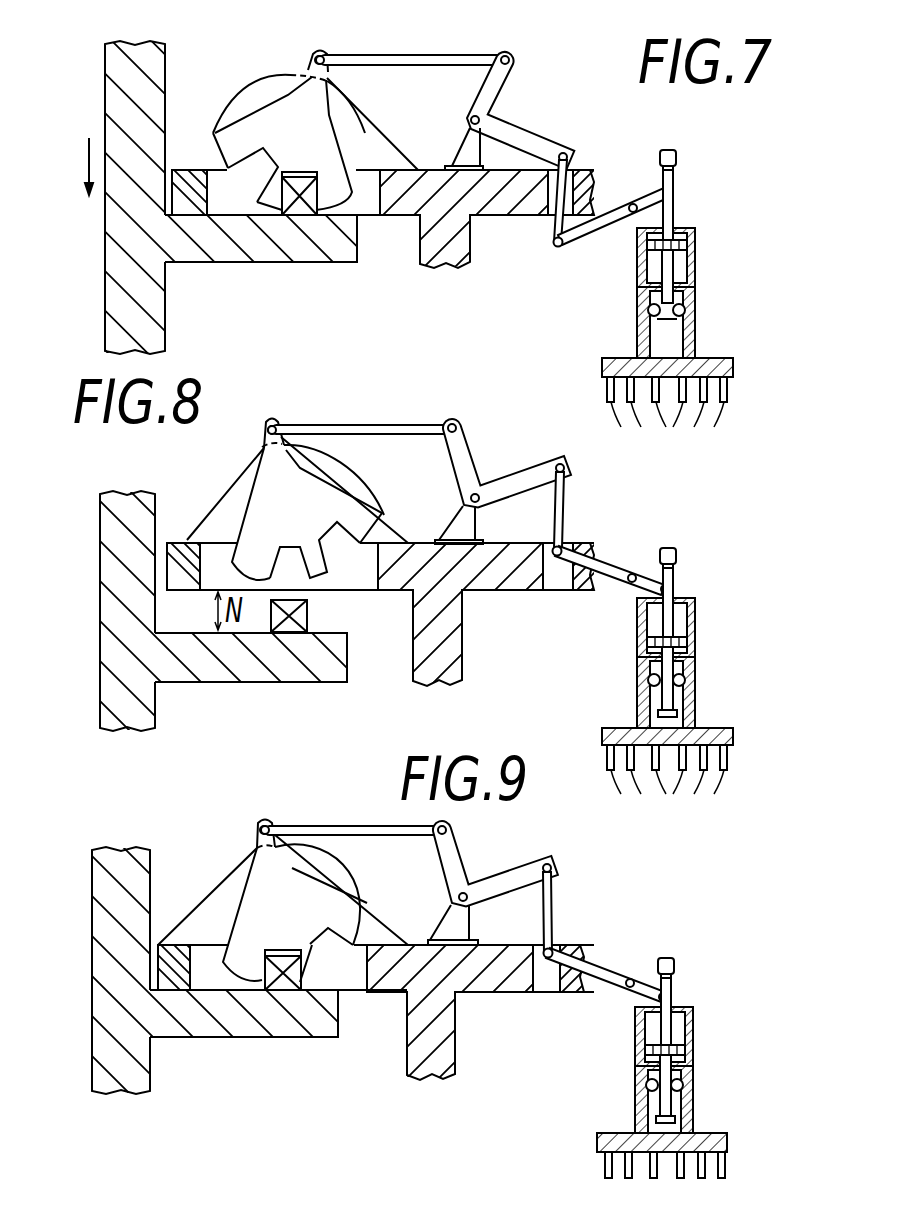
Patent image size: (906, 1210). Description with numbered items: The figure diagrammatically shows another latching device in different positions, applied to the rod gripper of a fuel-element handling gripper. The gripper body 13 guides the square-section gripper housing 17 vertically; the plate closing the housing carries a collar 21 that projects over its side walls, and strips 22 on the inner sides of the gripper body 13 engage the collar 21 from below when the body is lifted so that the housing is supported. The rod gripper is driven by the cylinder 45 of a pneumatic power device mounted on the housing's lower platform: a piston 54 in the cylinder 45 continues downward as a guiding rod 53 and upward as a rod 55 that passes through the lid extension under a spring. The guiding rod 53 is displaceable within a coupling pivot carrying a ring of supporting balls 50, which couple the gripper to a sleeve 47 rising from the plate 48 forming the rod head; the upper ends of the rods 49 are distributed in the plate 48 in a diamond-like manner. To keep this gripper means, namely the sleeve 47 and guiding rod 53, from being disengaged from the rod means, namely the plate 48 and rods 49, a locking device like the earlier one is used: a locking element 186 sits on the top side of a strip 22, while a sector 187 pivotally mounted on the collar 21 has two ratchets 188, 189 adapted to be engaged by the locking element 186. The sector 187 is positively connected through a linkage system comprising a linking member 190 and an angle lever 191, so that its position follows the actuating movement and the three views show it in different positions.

In FIG. 7, the gripper body 13 is at (122, 78).
In FIG. 8, the gripper body 13 is at (100, 520).
In FIG. 9, the gripper body 13 is at (105, 885).
In FIG. 7, the gripper housing 17 is at (428, 244).
In FIG. 8, the gripper housing 17 is at (455, 660).
In FIG. 9, the gripper housing 17 is at (425, 1064).
In FIG. 7, the collar 21 is at (186, 165).
In FIG. 8, the collar 21 is at (178, 560).
In FIG. 9, the collar 21 is at (178, 955).
In FIG. 7, the strips 22 is at (202, 255).
In FIG. 8, the strips 22 is at (243, 668).
In FIG. 9, the strips 22 is at (197, 1025).
In FIG. 7, the cylinder 45 is at (643, 258).
In FIG. 8, the cylinder 45 is at (638, 625).
In FIG. 9, the cylinder 45 is at (638, 1025).
In FIG. 7, the sleeve 47 is at (648, 322).
In FIG. 8, the sleeve 47 is at (640, 700).
In FIG. 9, the sleeve 47 is at (640, 1110).
In FIG. 7, the plate 48 is at (735, 368).
In FIG. 8, the plate 48 is at (732, 735).
In FIG. 9, the plate 48 is at (722, 1143).
In FIG. 7, the rods 49 is at (700, 404).
In FIG. 8, the rods 49 is at (667, 786).
In FIG. 9, the rods 49 is at (718, 1176).
In FIG. 7, the supporting balls 50 is at (688, 312).
In FIG. 8, the supporting balls 50 is at (690, 683).
In FIG. 9, the supporting balls 50 is at (690, 1085).
In FIG. 7, the guiding rod 53 is at (672, 265).
In FIG. 8, the guiding rod 53 is at (684, 654).
In FIG. 9, the guiding rod 53 is at (683, 1067).
In FIG. 7, the piston 54 is at (684, 247).
In FIG. 8, the piston 54 is at (686, 642).
In FIG. 9, the piston 54 is at (690, 1050).
In FIG. 7, the rod 55 is at (676, 212).
In FIG. 8, the rod 55 is at (670, 614).
In FIG. 9, the rod 55 is at (665, 1018).
In FIG. 7, the locking element 186 is at (299, 222).
In FIG. 8, the locking element 186 is at (308, 613).
In FIG. 9, the locking element 186 is at (282, 987).
In FIG. 7, the sector 187 is at (330, 160).
In FIG. 8, the sector 187 is at (348, 505).
In FIG. 9, the sector 187 is at (330, 906).
In FIG. 7, the ratchet 188 is at (268, 170).
In FIG. 8, the ratchet 188 is at (292, 558).
In FIG. 9, the ratchet 188 is at (295, 913).
In FIG. 7, the ratchet 189 is at (300, 172).
In FIG. 8, the ratchet 189 is at (340, 545).
In FIG. 9, the ratchet 189 is at (330, 940).
In FIG. 7, the linking member 190 is at (445, 57).
In FIG. 8, the linking member 190 is at (392, 425).
In FIG. 9, the linking member 190 is at (365, 827).
In FIG. 7, the angle lever 191 is at (493, 95).
In FIG. 8, the angle lever 191 is at (462, 462).
In FIG. 9, the angle lever 191 is at (450, 855).